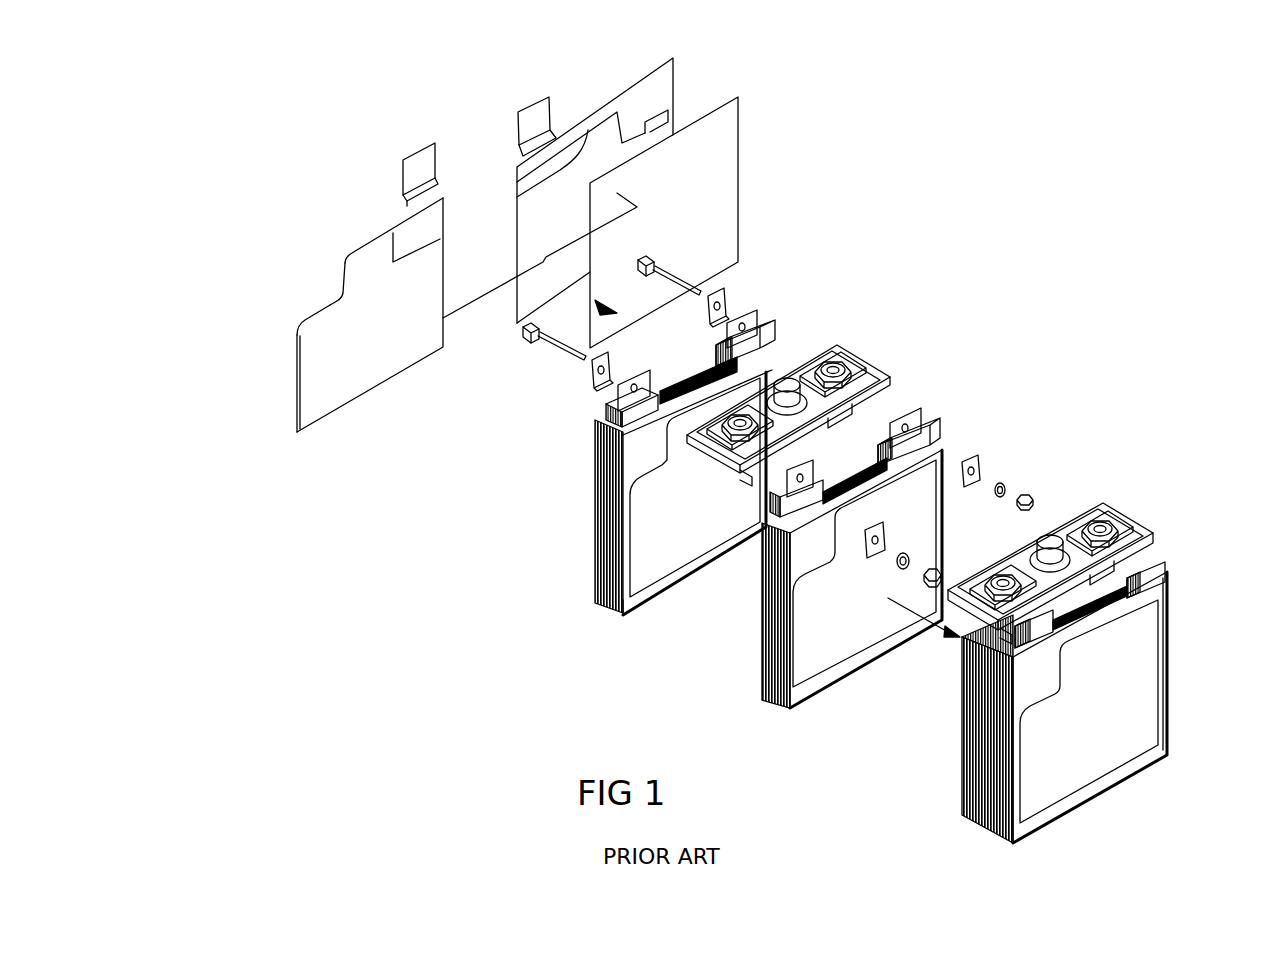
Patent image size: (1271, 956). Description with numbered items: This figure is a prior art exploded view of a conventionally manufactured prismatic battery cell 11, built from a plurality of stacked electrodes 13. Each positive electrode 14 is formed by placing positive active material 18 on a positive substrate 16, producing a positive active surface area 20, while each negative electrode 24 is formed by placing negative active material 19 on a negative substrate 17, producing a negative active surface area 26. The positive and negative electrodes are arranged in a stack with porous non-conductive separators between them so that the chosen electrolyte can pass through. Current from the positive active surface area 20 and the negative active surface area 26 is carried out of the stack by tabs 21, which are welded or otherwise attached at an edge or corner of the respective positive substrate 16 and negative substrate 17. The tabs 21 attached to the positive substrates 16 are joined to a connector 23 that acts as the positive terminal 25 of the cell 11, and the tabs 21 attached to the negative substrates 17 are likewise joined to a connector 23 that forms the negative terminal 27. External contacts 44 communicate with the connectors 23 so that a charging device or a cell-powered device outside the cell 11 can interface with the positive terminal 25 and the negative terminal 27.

The prismatic battery cell 11 is at (1192, 602).
The stacked electrodes 13 is at (650, 438).
The positive electrode 14 is at (670, 137).
The positive substrate 16 is at (664, 118).
The negative substrate 17 is at (363, 233).
The positive active material 18 is at (590, 128).
The negative active material 19 is at (343, 258).
The positive active surface area 20 is at (571, 236).
The tab 21 is at (402, 148).
The connector 23 is at (613, 396).
The negative electrode 24 is at (297, 356).
The positive terminal 25 is at (655, 393).
The negative active surface area 26 is at (676, 545).
The negative terminal 27 is at (748, 306).
The external contact 44 is at (837, 370).